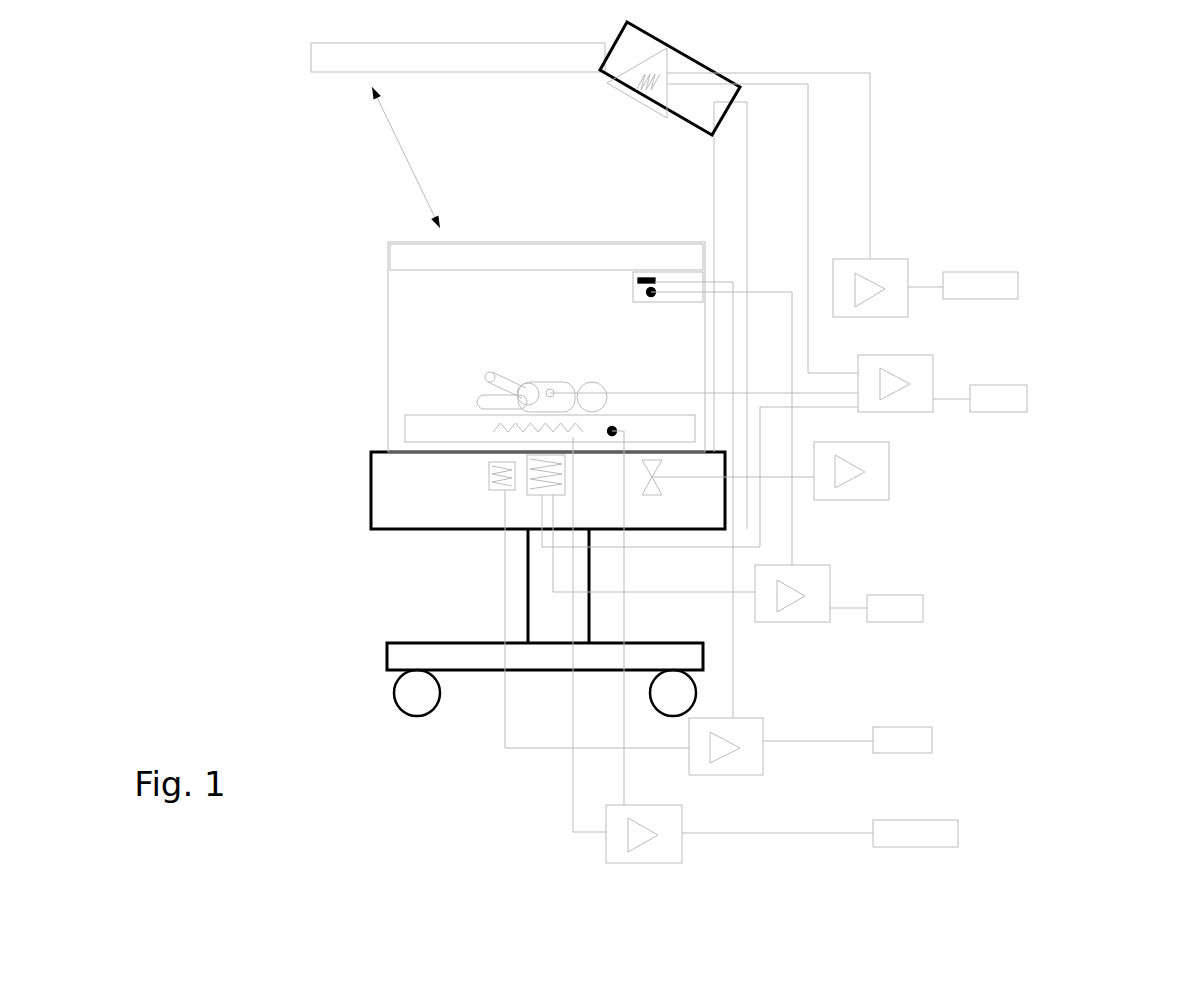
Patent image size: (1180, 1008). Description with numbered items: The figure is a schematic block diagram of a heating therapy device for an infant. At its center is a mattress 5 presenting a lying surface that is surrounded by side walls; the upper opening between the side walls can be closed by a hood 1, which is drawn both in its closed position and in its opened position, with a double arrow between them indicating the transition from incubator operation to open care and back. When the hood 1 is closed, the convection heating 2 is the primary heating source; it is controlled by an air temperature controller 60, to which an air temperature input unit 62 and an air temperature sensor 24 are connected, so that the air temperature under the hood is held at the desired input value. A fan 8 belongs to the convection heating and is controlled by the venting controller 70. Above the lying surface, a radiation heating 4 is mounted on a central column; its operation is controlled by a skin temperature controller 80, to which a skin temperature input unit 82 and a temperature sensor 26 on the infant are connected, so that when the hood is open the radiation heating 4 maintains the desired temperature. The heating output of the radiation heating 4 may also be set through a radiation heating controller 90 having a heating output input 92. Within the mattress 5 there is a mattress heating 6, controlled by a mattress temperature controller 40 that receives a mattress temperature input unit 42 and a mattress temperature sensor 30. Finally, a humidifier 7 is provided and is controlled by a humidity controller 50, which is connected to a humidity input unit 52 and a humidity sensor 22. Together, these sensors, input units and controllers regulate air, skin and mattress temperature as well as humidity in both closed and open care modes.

The hood 1 is at (313, 75).
The convection heating 2 is at (538, 487).
The radiation heating 4 is at (672, 60).
The mattress 5 is at (420, 410).
The mattress heating 6 is at (488, 429).
The humidifier 7 is at (478, 482).
The fan 8 is at (662, 497).
The humidity sensor 22 is at (637, 282).
The air temperature sensor 24 is at (651, 292).
The temperature sensor 26 is at (550, 391).
The mattress temperature sensor 30 is at (612, 431).
The mattress temperature controller 40 is at (702, 858).
The mattress temperature input unit 42 is at (967, 848).
The humidity controller 50 is at (778, 780).
The humidity input unit 52 is at (945, 741).
The air temperature controller 60 is at (818, 633).
The air temperature input unit 62 is at (935, 603).
The venting controller 70 is at (897, 507).
The skin temperature controller 80 is at (917, 430).
The skin temperature input unit 82 is at (1042, 400).
The radiation heating controller 90 is at (930, 318).
The heating output input 92 is at (1033, 283).